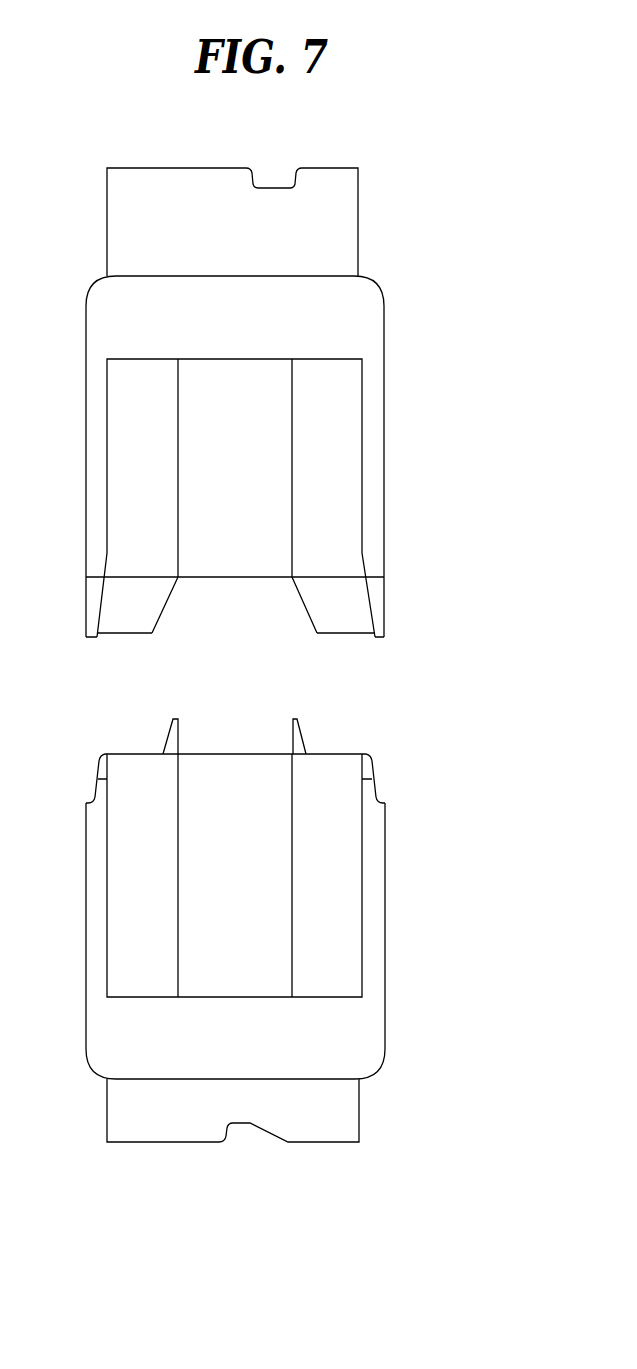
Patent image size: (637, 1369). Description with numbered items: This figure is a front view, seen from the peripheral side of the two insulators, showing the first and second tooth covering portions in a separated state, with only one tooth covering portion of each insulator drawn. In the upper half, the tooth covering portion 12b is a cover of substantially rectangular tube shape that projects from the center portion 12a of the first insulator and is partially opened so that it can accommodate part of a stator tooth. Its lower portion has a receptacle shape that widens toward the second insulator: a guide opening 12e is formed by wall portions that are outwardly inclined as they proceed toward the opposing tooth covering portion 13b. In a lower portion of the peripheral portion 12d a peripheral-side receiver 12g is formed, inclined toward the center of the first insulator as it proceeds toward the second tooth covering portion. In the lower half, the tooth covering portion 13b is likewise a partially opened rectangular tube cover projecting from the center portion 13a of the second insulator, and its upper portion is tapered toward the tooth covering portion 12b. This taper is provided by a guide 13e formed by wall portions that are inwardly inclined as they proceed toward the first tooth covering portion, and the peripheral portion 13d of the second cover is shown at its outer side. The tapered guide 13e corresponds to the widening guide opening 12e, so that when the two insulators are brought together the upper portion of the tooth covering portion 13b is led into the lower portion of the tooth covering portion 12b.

The center portion 12a is at (333, 167).
The tooth covering portion 12b is at (325, 443).
The peripheral portion 12d is at (385, 638).
The guide opening 12e is at (165, 605).
The peripheral-side receiver 12g is at (128, 612).
The center portion 13a is at (165, 1142).
The tooth covering portion 13b is at (328, 897).
The peripheral portion 13d is at (370, 765).
The guide 13e is at (167, 740).